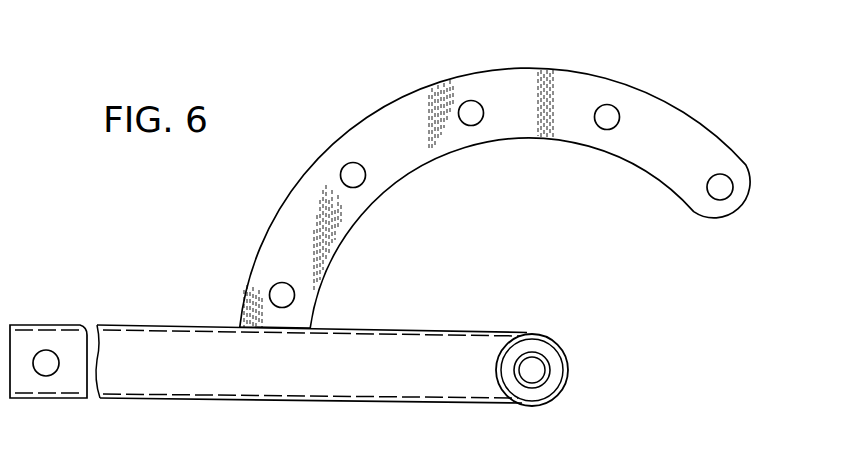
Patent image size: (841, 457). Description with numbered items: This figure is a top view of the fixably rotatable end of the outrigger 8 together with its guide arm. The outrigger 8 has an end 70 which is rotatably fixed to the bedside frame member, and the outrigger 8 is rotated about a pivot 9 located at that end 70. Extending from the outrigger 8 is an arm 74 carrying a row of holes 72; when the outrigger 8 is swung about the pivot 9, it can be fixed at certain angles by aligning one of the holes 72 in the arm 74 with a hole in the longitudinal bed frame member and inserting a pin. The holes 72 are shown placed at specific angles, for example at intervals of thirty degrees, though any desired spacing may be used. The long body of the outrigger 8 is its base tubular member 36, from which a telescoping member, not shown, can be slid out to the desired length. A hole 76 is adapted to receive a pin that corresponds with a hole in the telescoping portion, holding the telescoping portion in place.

The outrigger 8 is at (248, 407).
The pivot 9 is at (537, 369).
The base tubular member 36 is at (387, 387).
The end 70 is at (504, 340).
The holes 72 is at (473, 112).
The arm 74 is at (633, 107).
The hole 76 is at (48, 352).